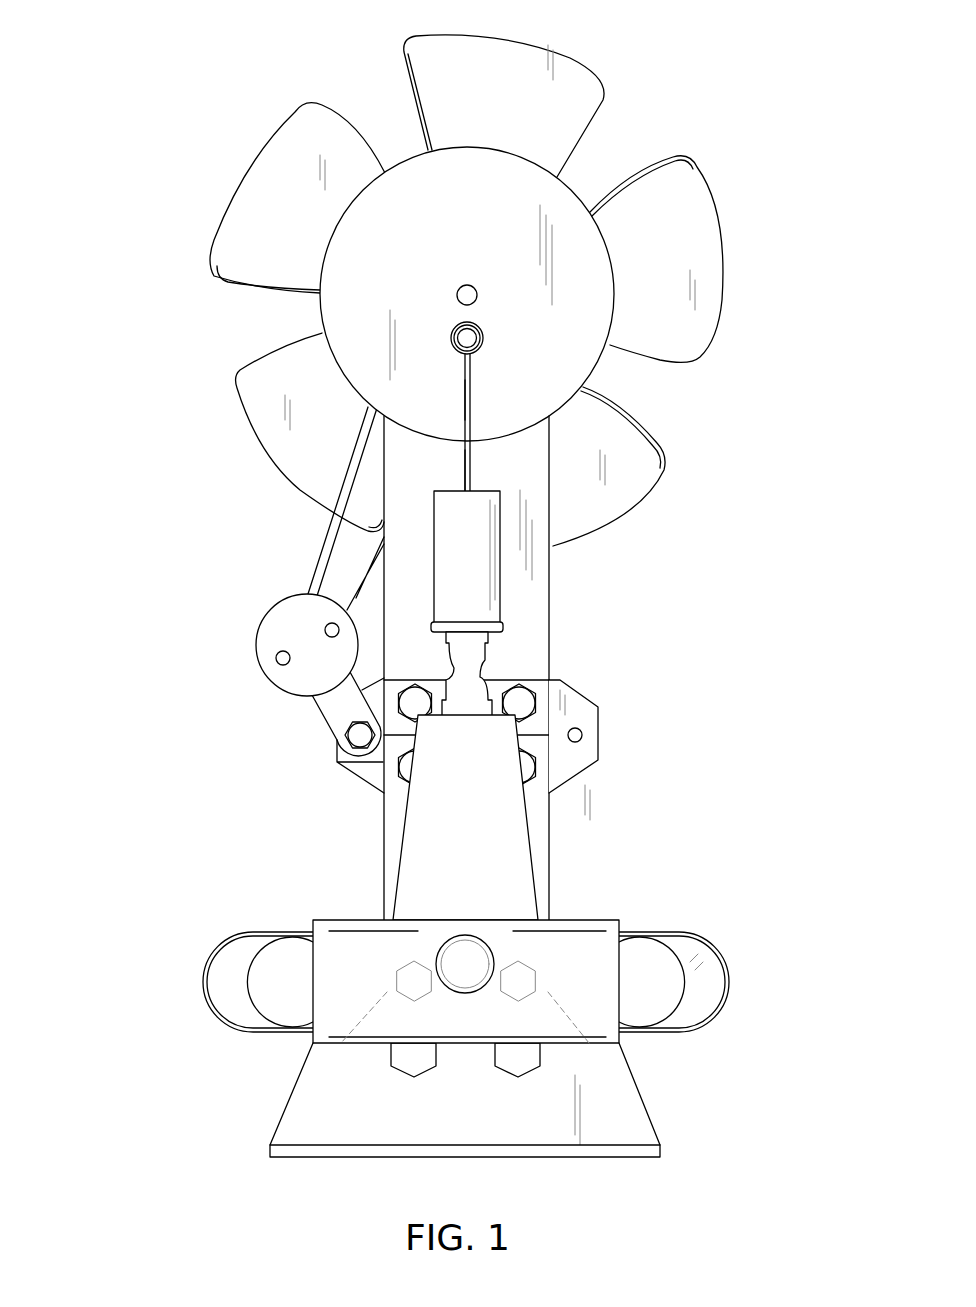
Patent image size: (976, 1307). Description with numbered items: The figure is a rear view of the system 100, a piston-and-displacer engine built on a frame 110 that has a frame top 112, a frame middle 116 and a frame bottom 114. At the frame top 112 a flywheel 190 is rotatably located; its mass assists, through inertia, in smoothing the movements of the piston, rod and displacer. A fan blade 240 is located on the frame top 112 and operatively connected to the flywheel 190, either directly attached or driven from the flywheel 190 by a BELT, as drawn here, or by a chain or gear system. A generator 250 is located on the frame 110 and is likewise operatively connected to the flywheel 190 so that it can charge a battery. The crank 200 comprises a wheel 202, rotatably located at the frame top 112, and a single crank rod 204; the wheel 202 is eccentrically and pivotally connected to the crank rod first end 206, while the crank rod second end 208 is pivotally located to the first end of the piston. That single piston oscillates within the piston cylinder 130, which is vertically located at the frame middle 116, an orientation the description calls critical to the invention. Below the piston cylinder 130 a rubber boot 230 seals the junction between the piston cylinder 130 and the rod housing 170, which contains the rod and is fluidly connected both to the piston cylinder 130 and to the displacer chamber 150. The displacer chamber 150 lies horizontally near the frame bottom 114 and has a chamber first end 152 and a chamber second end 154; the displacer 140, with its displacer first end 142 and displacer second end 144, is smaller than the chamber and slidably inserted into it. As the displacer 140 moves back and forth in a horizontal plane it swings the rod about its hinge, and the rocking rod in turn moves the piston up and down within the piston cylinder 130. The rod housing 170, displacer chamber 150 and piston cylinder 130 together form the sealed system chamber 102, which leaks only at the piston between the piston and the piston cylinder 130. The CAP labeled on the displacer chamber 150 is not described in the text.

The system 100 is at (140, 92).
The crank 200 is at (277, 320).
The fan blade 240 is at (705, 184).
The flywheel 190 is at (598, 363).
The wheel 202 is at (467, 319).
The crank rod first end 206 is at (462, 364).
The crank rod 204 is at (462, 384).
The crank rod second end 208 is at (462, 483).
The belt BELT is at (325, 545).
The generator 250 is at (259, 621).
The piston cylinder 130 is at (500, 597).
The rubber boot 230 is at (487, 679).
The frame top 112 is at (552, 437).
The frame 110 is at (572, 557).
The frame middle 116 is at (550, 753).
The sealed system chamber 102 is at (278, 930).
The rod housing 170 is at (405, 822).
The cap CAP is at (444, 944).
The displacer chamber 150 is at (432, 994).
The chamber first end 152 is at (679, 932).
The chamber second end 154 is at (203, 988).
The displacer second end 144 is at (247, 995).
The displacer 140 is at (265, 1036).
The displacer first end 142 is at (680, 1032).
The frame bottom 114 is at (630, 1158).